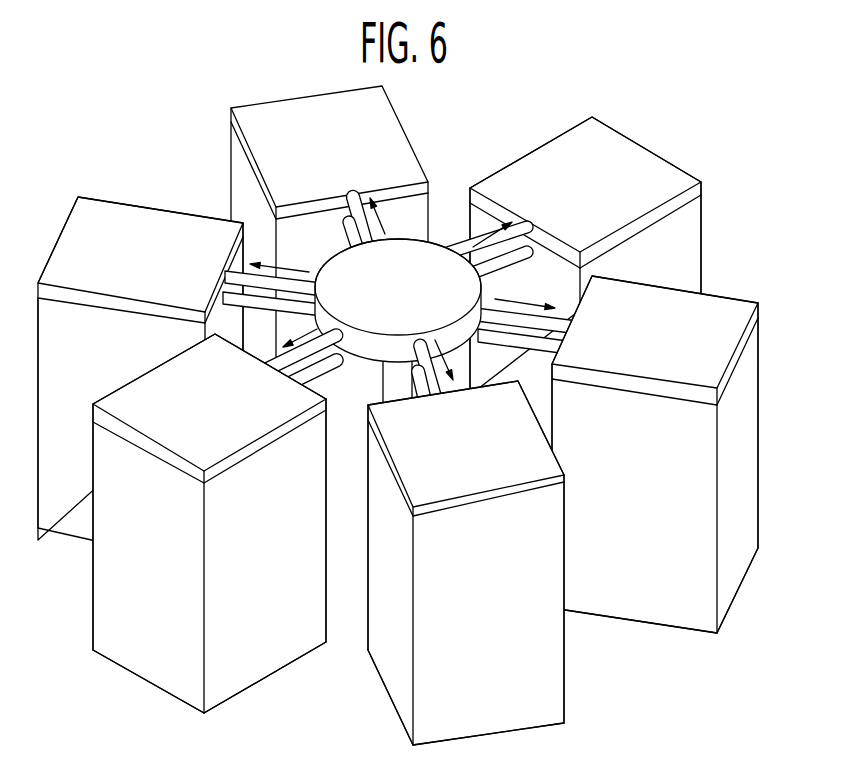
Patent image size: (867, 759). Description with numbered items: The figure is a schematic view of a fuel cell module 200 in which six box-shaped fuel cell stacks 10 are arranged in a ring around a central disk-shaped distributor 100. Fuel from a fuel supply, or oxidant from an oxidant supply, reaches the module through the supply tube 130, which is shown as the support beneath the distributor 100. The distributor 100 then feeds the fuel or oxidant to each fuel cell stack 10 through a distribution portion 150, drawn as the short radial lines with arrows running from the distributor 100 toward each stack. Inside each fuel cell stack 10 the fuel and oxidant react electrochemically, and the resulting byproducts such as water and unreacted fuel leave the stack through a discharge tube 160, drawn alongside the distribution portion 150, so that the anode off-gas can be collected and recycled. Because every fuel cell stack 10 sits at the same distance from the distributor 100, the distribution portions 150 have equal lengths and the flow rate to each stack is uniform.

The fuel cell module 200 is at (53, 126).
The distributor 100 is at (436, 257).
The supply tube 130 is at (366, 539).
The distribution portion 150 is at (527, 216).
The discharge tube 160 is at (555, 215).
The fuel cell stack 10 is at (686, 454).